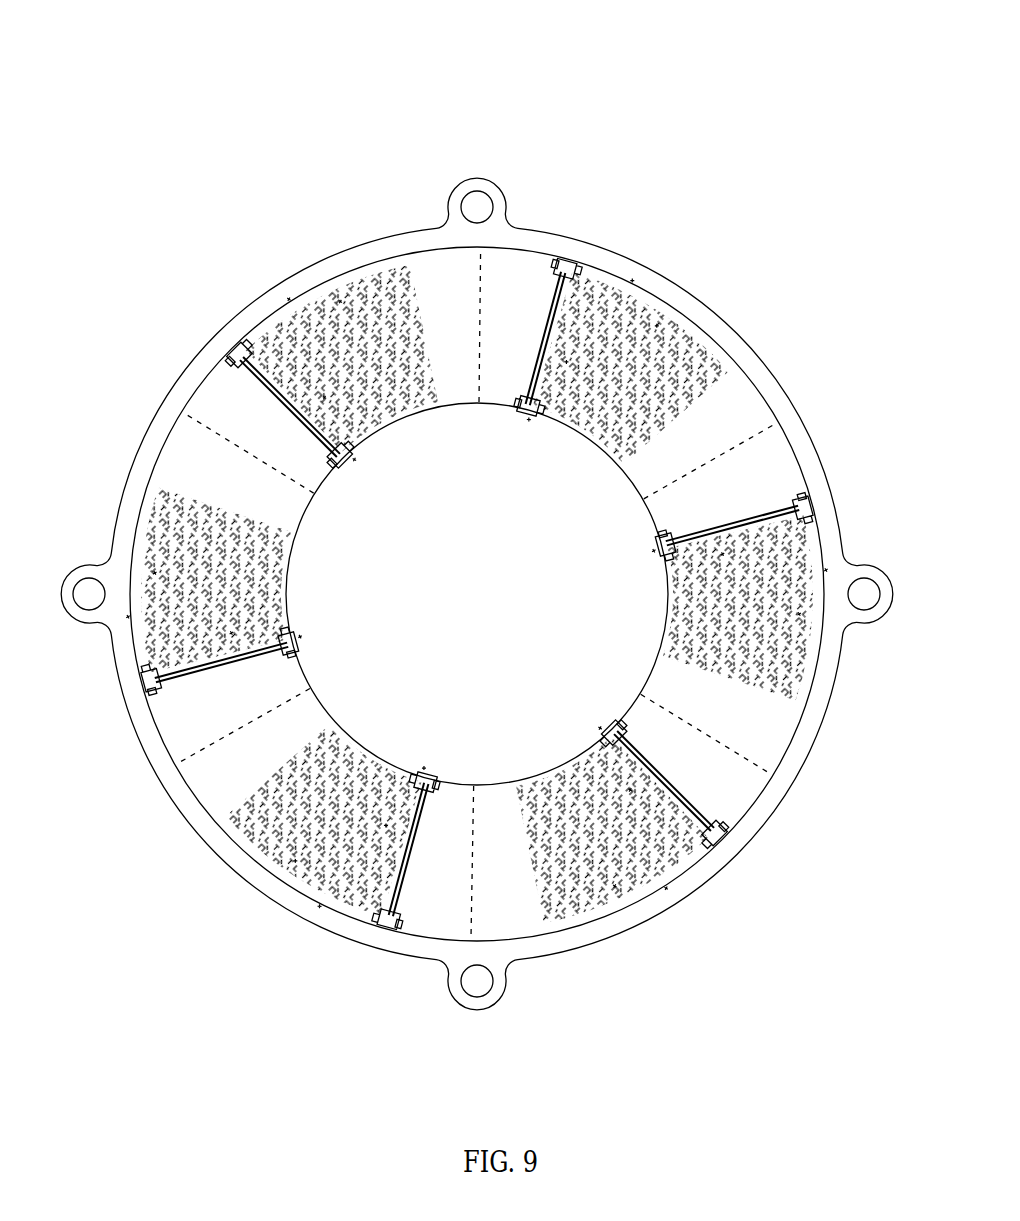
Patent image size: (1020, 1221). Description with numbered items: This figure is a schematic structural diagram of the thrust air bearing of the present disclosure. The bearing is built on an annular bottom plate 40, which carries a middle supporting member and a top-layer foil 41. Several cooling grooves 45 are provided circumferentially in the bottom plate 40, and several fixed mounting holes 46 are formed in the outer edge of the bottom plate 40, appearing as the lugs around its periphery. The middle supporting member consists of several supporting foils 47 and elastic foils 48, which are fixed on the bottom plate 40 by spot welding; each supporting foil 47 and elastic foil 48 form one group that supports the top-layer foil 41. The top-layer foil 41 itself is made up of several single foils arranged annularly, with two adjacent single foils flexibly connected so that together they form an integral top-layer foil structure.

The bottom plate 40 is at (662, 278).
The top-layer foil 41 is at (747, 380).
The cooling groove 45 is at (702, 848).
The fixed mounting hole 46 is at (475, 202).
The supporting foil 47 is at (728, 785).
The elastic foil 48 is at (609, 862).